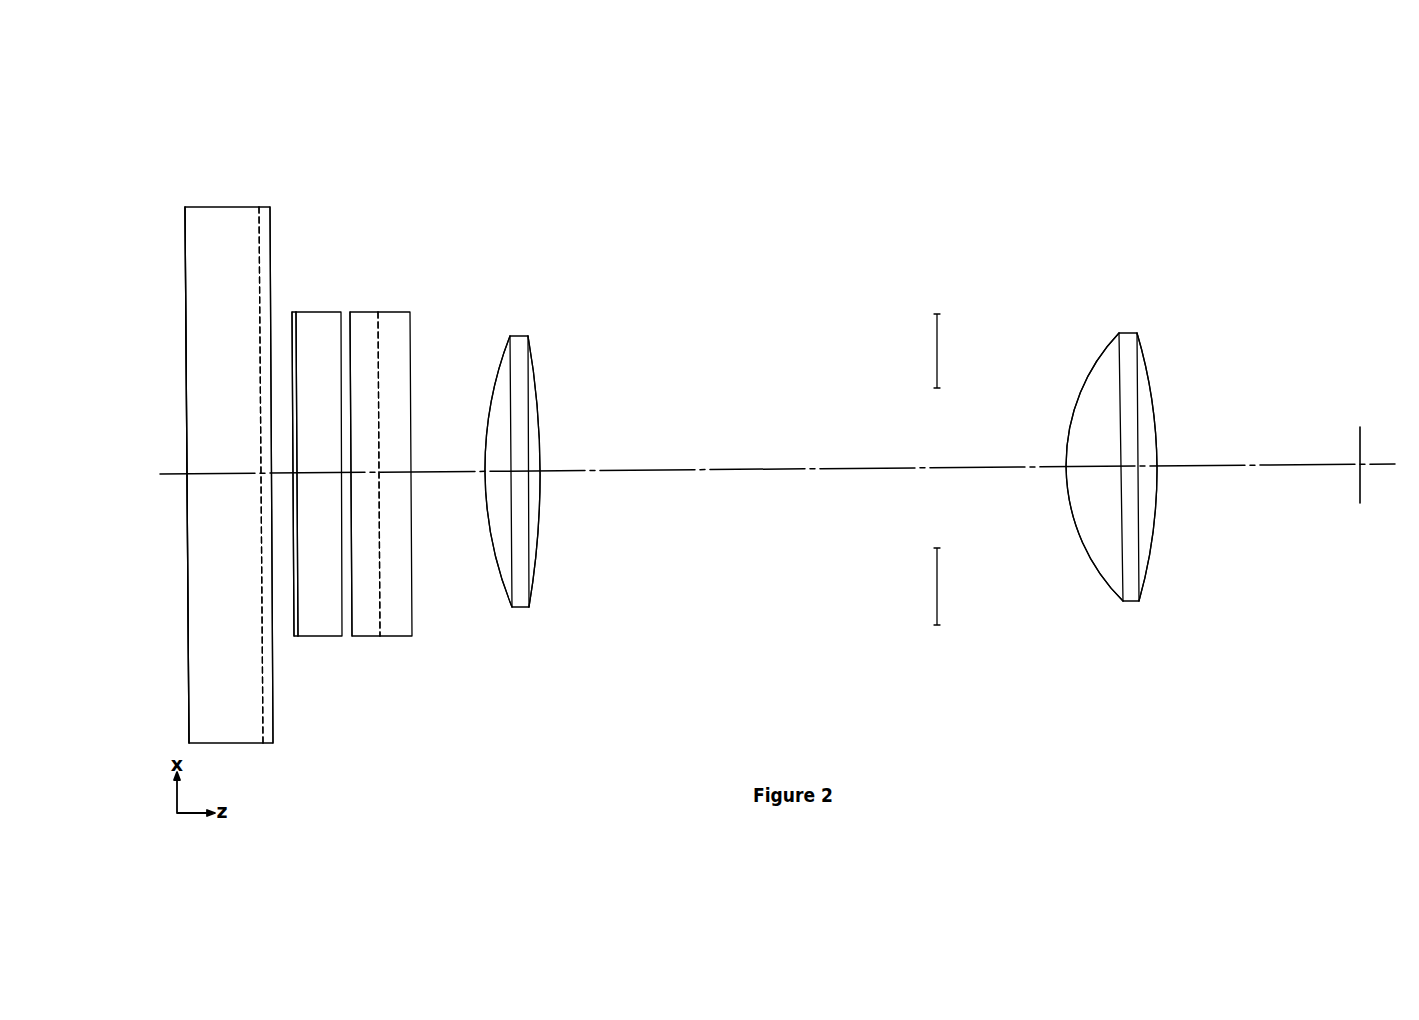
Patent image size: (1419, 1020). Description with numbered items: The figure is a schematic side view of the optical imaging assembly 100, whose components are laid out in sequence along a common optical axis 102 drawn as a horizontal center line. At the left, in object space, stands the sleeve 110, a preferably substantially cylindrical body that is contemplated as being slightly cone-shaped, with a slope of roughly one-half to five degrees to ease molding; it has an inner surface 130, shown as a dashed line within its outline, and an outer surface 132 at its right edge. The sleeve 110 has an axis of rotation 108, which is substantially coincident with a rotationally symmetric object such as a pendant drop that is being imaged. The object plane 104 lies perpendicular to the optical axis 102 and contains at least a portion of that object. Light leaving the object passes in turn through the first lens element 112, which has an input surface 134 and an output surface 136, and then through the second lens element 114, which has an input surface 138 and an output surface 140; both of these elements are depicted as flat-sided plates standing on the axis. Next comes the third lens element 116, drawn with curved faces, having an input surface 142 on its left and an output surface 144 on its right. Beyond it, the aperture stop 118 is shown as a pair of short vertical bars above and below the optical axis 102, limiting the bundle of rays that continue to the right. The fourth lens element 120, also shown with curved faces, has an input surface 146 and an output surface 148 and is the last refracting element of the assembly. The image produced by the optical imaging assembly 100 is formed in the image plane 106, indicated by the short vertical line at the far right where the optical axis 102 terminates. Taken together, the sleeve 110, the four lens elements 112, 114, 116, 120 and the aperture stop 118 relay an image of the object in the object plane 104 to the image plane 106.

The optical imaging assembly 100 is at (373, 135).
The optical axis 102 is at (775, 470).
The object plane 104 is at (188, 462).
The image plane 106 is at (1363, 437).
The axis of rotation 108 is at (190, 560).
The sleeve 110 is at (220, 265).
The first lens element 112 is at (316, 337).
The second lens element 114 is at (393, 333).
The third lens element 116 is at (515, 357).
The aperture stop 118 is at (940, 330).
The fourth lens element 120 is at (1125, 345).
The inner surface 130 is at (262, 635).
The outer surface 132 is at (273, 695).
The input surface 134 is at (295, 640).
The output surface 136 is at (317, 608).
The input surface 138 is at (353, 640).
The output surface 140 is at (391, 608).
The input surface 142 is at (497, 578).
The output surface 144 is at (535, 555).
The input surface 146 is at (1102, 578).
The output surface 148 is at (1148, 555).